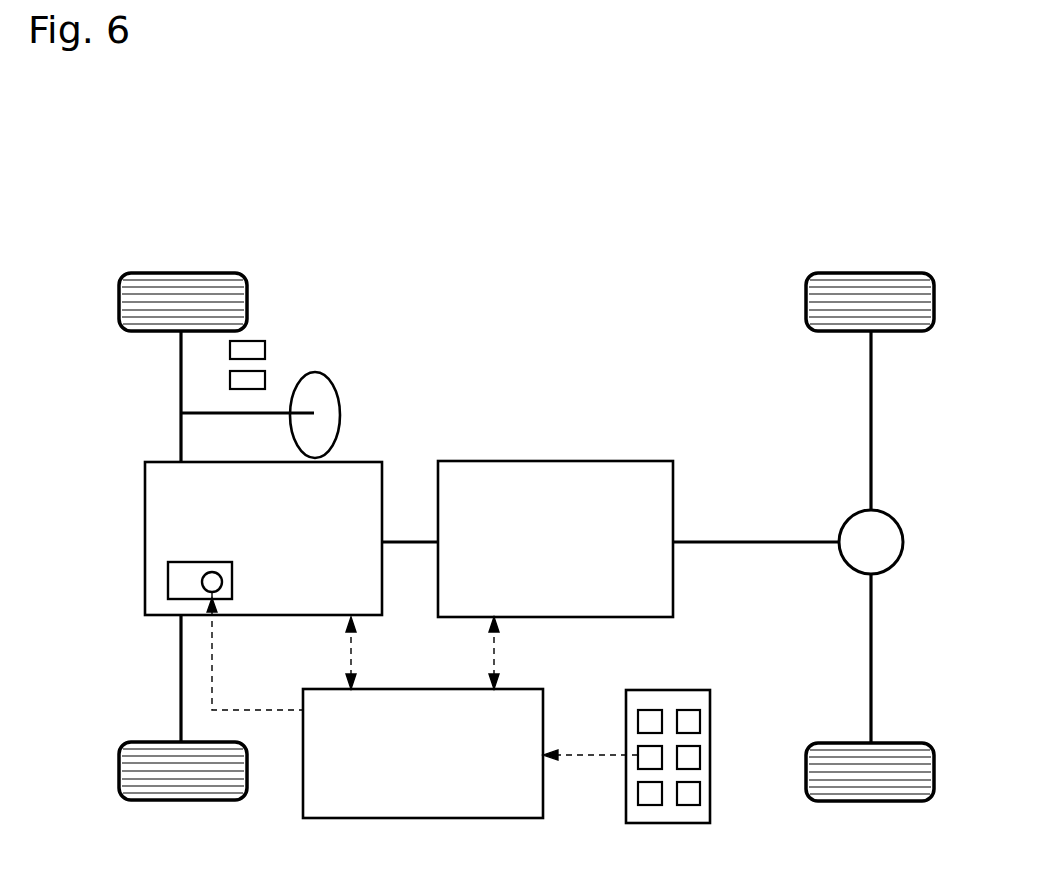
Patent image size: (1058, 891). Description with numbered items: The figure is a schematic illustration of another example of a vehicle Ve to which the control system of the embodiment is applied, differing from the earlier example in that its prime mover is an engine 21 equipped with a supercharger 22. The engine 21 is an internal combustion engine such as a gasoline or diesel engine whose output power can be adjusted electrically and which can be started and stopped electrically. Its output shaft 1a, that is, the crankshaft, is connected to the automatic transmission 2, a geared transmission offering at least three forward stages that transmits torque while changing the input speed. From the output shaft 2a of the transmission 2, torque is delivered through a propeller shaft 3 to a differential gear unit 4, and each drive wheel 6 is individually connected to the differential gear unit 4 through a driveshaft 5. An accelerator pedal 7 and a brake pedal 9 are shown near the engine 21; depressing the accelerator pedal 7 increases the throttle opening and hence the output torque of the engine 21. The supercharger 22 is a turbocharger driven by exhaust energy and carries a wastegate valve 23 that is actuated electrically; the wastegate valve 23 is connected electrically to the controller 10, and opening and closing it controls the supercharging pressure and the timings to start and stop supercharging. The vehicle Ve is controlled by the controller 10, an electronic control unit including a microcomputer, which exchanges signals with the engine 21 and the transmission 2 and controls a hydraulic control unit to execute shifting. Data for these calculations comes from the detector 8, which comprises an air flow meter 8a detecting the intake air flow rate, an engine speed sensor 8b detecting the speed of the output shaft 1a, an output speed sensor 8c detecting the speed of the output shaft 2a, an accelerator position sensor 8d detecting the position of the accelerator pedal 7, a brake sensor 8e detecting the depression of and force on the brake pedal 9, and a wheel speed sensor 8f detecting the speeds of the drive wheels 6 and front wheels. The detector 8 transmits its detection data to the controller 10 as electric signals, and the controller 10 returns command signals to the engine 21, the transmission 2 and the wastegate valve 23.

The vehicle Ve is at (326, 256).
The output shaft 1a is at (409, 540).
The automatic transmission 2 is at (547, 460).
The output shaft of the transmission 2a is at (695, 540).
The propeller shaft 3 is at (779, 543).
The differential gear unit 4 is at (903, 542).
The driveshaft 5 is at (872, 428).
The drive wheel 6 is at (873, 272).
The accelerator pedal 7 is at (267, 348).
The detector 8 is at (667, 825).
The air flow meter 8a is at (646, 722).
The engine speed sensor 8b is at (646, 758).
The output speed sensor 8c is at (648, 796).
The accelerator position sensor 8d is at (688, 720).
The brake sensor 8e is at (688, 757).
The wheel speed sensor 8f is at (688, 793).
The brake pedal 9 is at (267, 377).
The controller 10 is at (433, 820).
The engine 21 is at (145, 545).
The supercharger 22 is at (168, 588).
The wastegate valve 23 is at (222, 582).